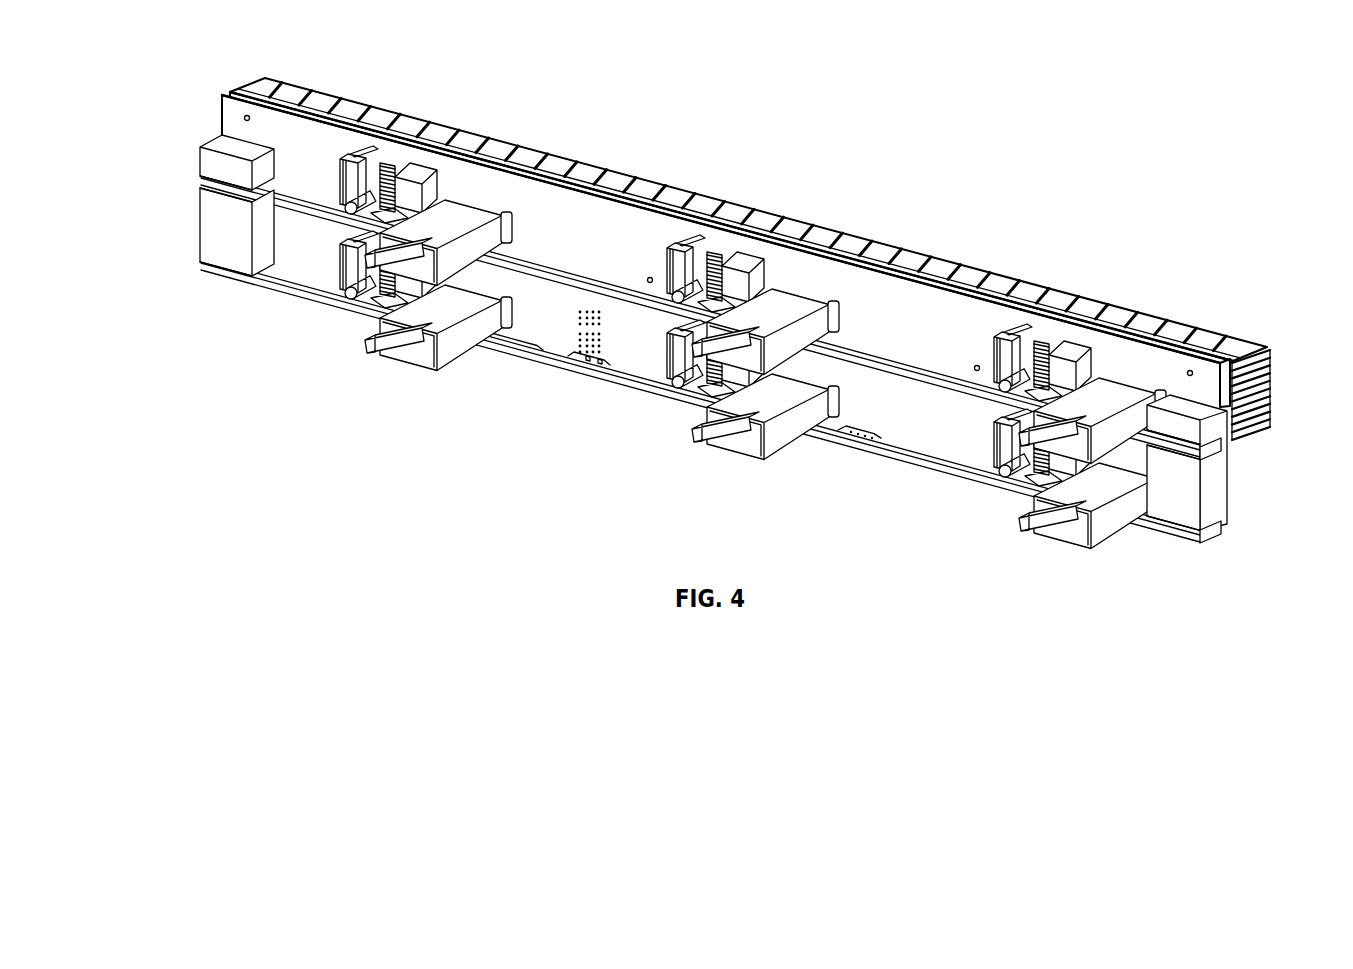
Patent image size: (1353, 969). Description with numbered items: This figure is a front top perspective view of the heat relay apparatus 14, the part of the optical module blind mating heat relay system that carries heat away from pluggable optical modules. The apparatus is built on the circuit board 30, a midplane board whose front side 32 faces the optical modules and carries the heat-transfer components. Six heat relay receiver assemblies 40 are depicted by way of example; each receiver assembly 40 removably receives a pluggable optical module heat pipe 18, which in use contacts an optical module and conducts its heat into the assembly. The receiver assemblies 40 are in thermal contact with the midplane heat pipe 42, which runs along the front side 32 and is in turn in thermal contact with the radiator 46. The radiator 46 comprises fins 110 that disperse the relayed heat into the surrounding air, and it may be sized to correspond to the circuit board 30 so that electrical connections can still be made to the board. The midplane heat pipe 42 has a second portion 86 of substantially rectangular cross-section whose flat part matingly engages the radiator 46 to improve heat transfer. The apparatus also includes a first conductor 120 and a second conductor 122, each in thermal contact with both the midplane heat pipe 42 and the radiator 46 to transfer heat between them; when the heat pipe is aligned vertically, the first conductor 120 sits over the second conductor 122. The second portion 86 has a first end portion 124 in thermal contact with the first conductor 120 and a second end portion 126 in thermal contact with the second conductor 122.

The heat relay apparatus 14 is at (731, 310).
The pluggable optical module heat pipe 18 is at (362, 266).
The circuit board 30 is at (362, 130).
The front side 32 is at (226, 112).
The heat relay receiver assembly 40 is at (462, 211).
The midplane heat pipe 42 is at (570, 278).
The radiator 46 is at (838, 232).
The second portion 86 is at (1224, 450).
The fins 110 is at (264, 78).
The first conductor 120 is at (1230, 486).
The second conductor 122 is at (210, 226).
The first end portion 124 is at (1186, 460).
The second end portion 126 is at (206, 187).